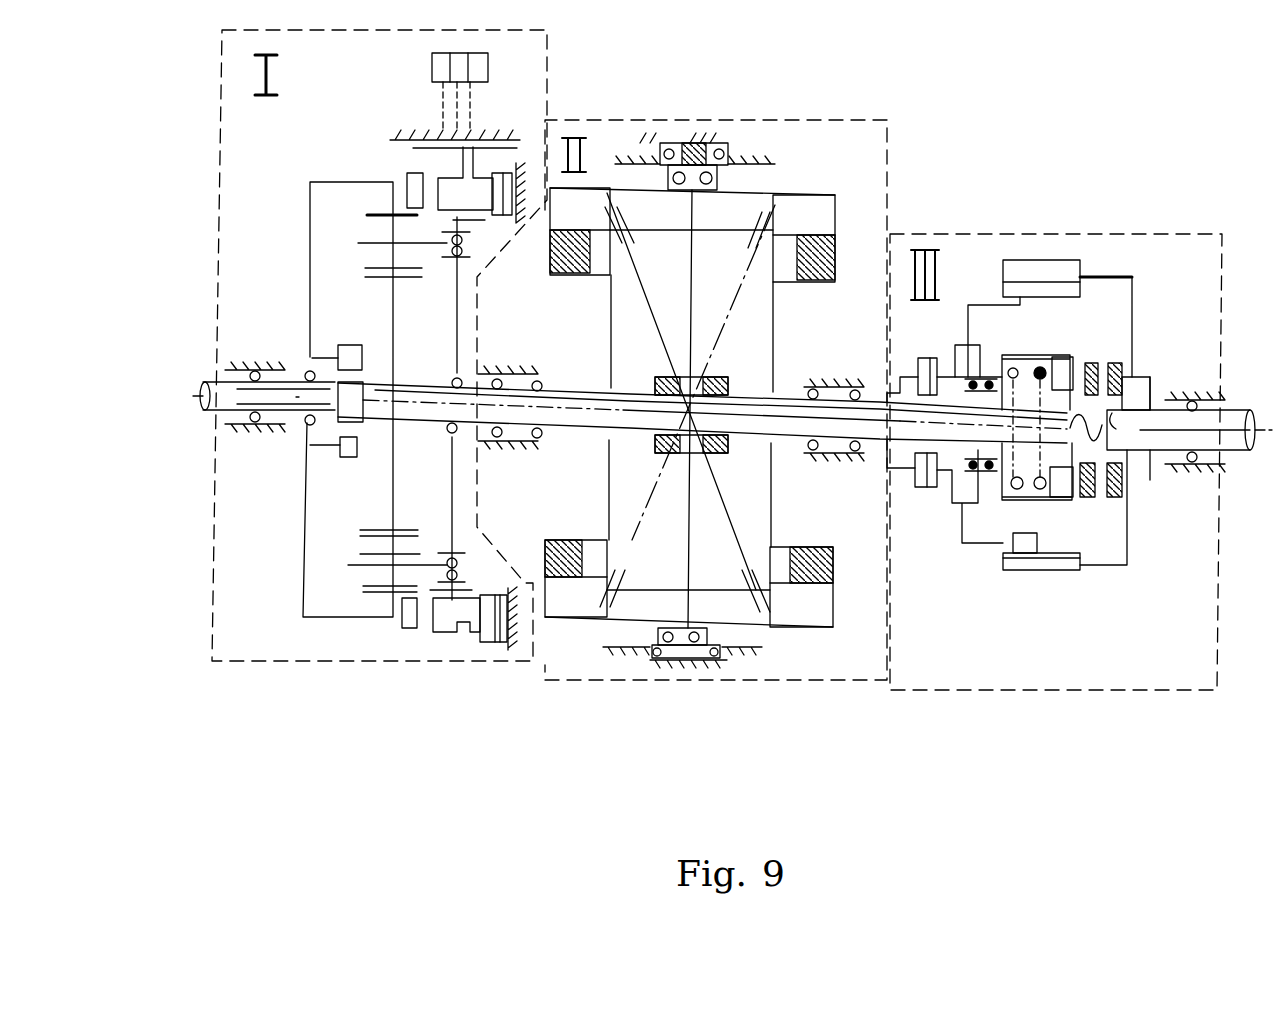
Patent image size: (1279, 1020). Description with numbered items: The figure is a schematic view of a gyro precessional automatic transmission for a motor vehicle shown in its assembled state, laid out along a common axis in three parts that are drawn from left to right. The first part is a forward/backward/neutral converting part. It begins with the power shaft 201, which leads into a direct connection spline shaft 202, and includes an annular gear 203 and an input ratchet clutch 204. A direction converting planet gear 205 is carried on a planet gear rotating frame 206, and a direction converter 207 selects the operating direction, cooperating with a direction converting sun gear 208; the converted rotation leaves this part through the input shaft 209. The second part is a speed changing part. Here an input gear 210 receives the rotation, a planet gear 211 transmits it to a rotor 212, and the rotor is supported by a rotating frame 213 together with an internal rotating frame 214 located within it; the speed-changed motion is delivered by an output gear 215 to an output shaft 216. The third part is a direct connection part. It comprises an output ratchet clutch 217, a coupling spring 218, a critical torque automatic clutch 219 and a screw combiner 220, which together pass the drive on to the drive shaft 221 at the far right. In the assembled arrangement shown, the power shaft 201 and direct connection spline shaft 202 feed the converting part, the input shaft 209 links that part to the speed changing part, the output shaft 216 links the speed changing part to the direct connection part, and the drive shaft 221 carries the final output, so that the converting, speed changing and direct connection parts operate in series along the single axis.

The power shaft 201 is at (212, 384).
The direct connection spline shaft 202 is at (336, 382).
The annular gear 203 is at (312, 318).
The input ratchet clutch 204 is at (338, 448).
The direction converting planet gear 205 is at (387, 550).
The planet gear rotating frame 206 is at (457, 333).
The direction converter 207 is at (450, 192).
The direction converting sun gear 208 is at (388, 493).
The input shaft 209 is at (433, 430).
The input gear 210 is at (607, 490).
The planet gear 211 is at (660, 590).
The rotor 212 is at (817, 580).
The rotating frame 213 is at (663, 140).
The internal rotating frame 214 is at (668, 377).
The output gear 215 is at (775, 390).
The output shaft 216 is at (862, 403).
The output ratchet clutch 217 is at (930, 358).
The coupling spring 218 is at (1040, 368).
The critical torque automatic clutch 219 is at (1116, 363).
The screw combiner 220 is at (1080, 420).
The drive shaft 221 is at (1150, 450).